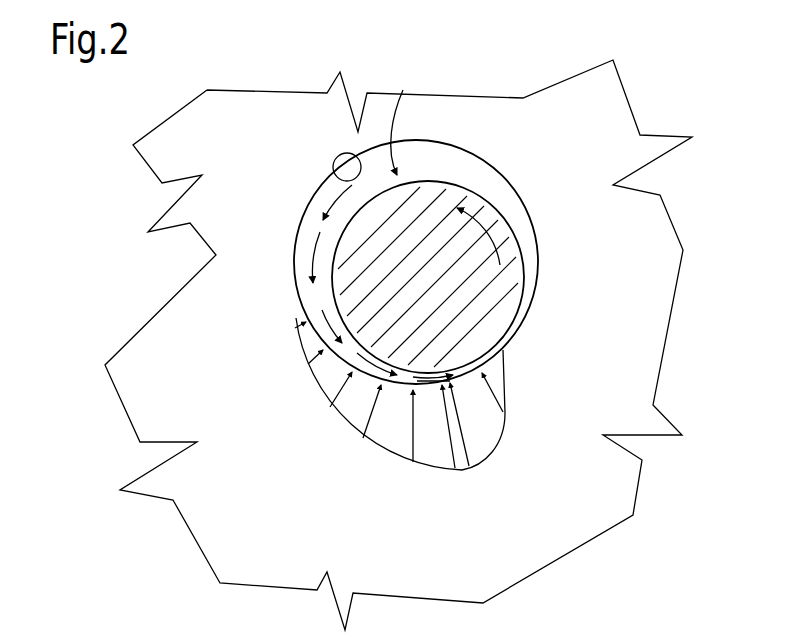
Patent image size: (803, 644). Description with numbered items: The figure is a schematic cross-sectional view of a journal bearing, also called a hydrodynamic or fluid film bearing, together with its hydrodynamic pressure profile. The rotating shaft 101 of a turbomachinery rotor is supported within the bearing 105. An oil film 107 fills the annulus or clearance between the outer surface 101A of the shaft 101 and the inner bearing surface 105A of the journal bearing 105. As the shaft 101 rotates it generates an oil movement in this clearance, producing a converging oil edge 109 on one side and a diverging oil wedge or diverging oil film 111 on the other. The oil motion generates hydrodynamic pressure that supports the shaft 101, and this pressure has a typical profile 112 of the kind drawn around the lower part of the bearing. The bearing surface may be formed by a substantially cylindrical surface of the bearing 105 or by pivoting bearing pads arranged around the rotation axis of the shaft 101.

The shaft 101 is at (480, 308).
The outer surface of the shaft 101A is at (490, 203).
The journal bearing 105 is at (273, 457).
The inner bearing surface 105A is at (334, 170).
The oil film 107 is at (407, 121).
The converging oil edge 109 is at (313, 293).
The diverging oil wedge 111 is at (445, 160).
The hydrodynamic pressure profile 112 is at (382, 457).